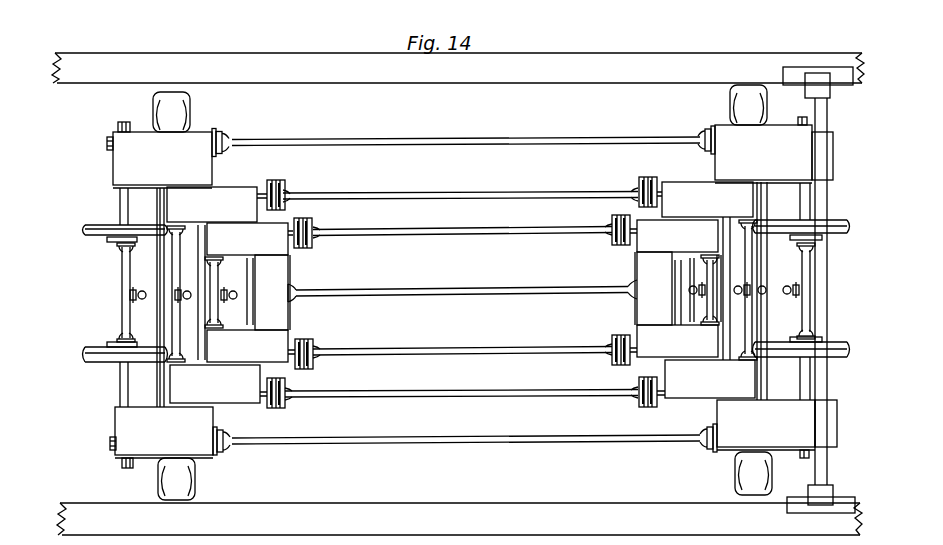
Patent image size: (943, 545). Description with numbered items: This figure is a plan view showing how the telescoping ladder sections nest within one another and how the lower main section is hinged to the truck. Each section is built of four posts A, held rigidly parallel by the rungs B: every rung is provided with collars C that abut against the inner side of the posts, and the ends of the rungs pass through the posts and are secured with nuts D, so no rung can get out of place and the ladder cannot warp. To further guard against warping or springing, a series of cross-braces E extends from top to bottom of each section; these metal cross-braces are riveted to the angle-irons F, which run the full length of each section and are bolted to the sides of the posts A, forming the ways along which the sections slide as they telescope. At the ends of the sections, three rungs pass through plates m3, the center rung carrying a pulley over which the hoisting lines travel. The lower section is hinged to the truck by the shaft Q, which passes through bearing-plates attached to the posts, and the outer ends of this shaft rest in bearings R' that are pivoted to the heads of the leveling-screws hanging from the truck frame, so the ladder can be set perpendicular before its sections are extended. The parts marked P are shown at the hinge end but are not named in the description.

The post A is at (475, 291).
The rung B is at (460, 284).
The collar C is at (461, 289).
The nut D is at (449, 294).
The cross-brace E is at (458, 297).
The angle-iron F is at (734, 290).
The pillow block P is at (462, 292).
The shaft Q is at (821, 291).
The bearing R' is at (819, 289).
The plate m3 is at (282, 182).